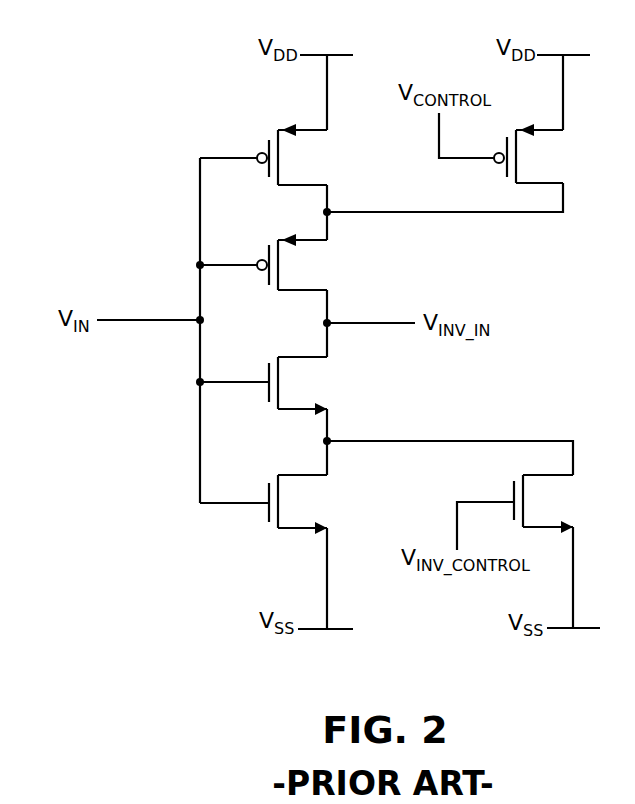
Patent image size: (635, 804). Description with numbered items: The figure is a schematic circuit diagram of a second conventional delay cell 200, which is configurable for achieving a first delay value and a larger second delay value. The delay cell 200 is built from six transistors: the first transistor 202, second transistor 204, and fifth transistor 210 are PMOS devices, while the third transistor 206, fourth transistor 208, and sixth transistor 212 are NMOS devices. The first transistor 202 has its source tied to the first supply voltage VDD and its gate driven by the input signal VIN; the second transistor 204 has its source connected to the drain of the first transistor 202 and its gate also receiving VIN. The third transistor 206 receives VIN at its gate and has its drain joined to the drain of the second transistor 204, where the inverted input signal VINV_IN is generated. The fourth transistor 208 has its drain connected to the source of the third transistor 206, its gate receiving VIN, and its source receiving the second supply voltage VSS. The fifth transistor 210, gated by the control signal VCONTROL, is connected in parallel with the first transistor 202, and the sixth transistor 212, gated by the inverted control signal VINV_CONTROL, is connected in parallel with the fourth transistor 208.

The second conventional delay cell 200 is at (108, 572).
The first transistor 202 is at (312, 130).
The second transistor 204 is at (312, 240).
The third transistor 206 is at (312, 357).
The fourth transistor 208 is at (312, 475).
The fifth transistor 210 is at (548, 183).
The sixth transistor 212 is at (556, 527).